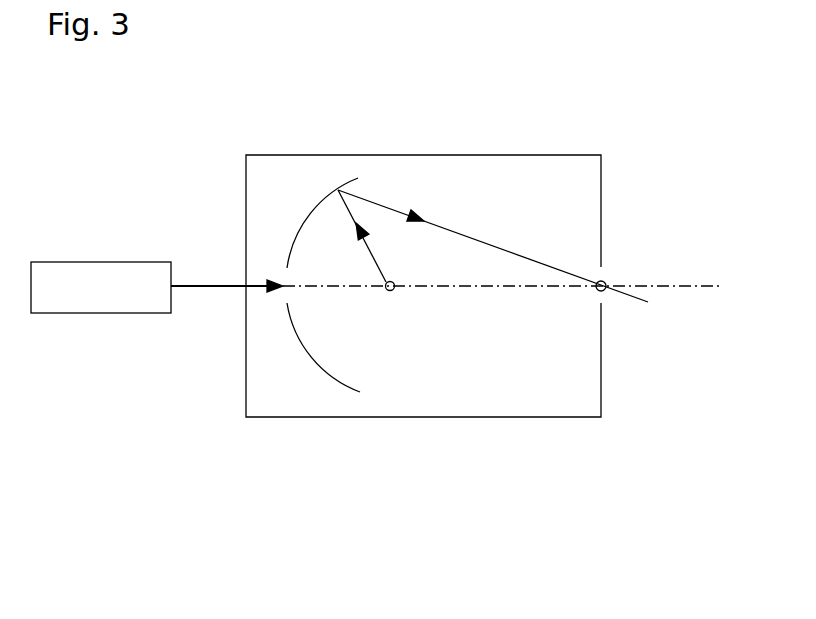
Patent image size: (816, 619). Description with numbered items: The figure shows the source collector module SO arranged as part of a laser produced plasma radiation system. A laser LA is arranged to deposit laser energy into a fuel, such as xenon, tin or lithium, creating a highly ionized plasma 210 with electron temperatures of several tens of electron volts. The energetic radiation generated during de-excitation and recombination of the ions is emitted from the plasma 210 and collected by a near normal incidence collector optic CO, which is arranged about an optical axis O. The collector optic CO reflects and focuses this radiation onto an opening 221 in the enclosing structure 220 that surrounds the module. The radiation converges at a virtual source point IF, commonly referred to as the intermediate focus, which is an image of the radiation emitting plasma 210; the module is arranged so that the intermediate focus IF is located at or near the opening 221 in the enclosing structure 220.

The source collector module SO is at (422, 85).
The enclosing structure 220 is at (447, 155).
The collector optic CO is at (330, 377).
The plasma 210 is at (392, 281).
The opening 221 is at (605, 271).
The virtual source point IF is at (598, 288).
The optical axis O is at (726, 280).
The laser LA is at (53, 313).